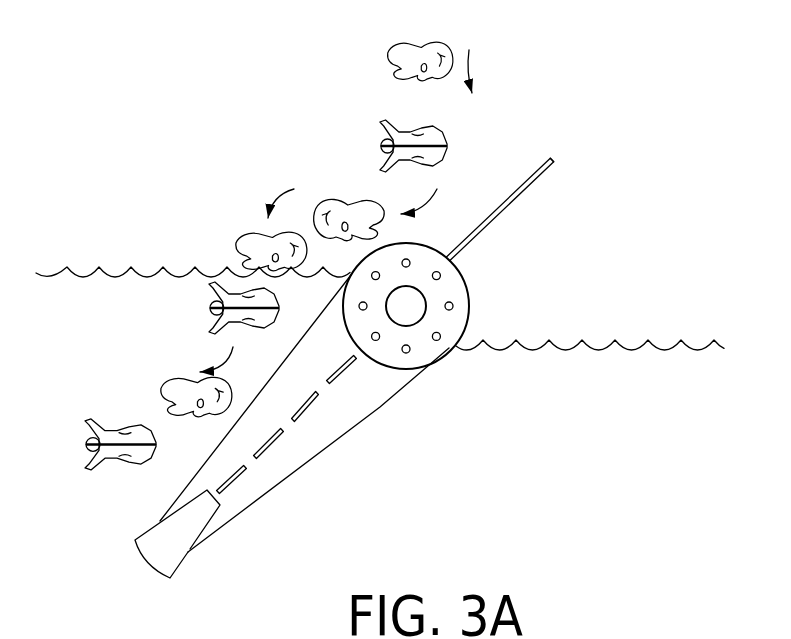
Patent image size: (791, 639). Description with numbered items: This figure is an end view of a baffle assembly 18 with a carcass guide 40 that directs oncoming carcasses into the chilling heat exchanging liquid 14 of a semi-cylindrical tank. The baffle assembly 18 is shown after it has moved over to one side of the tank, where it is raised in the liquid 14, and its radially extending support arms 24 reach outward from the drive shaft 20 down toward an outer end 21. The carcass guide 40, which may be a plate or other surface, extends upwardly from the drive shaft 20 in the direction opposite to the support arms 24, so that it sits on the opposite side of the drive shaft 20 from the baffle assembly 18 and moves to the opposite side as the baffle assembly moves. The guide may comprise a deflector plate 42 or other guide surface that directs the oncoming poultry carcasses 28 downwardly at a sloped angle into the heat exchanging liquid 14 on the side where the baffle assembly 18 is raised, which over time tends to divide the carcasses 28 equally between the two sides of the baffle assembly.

The heat exchanging liquid 14 is at (145, 275).
The baffle assembly 18 is at (389, 423).
The drive shaft 20 is at (462, 303).
The arm end 21 is at (168, 557).
The radially extending support arms 24 is at (296, 463).
The carcasses 28 is at (380, 145).
The carcass guide 40 is at (521, 198).
The deflector plate 42 is at (538, 167).